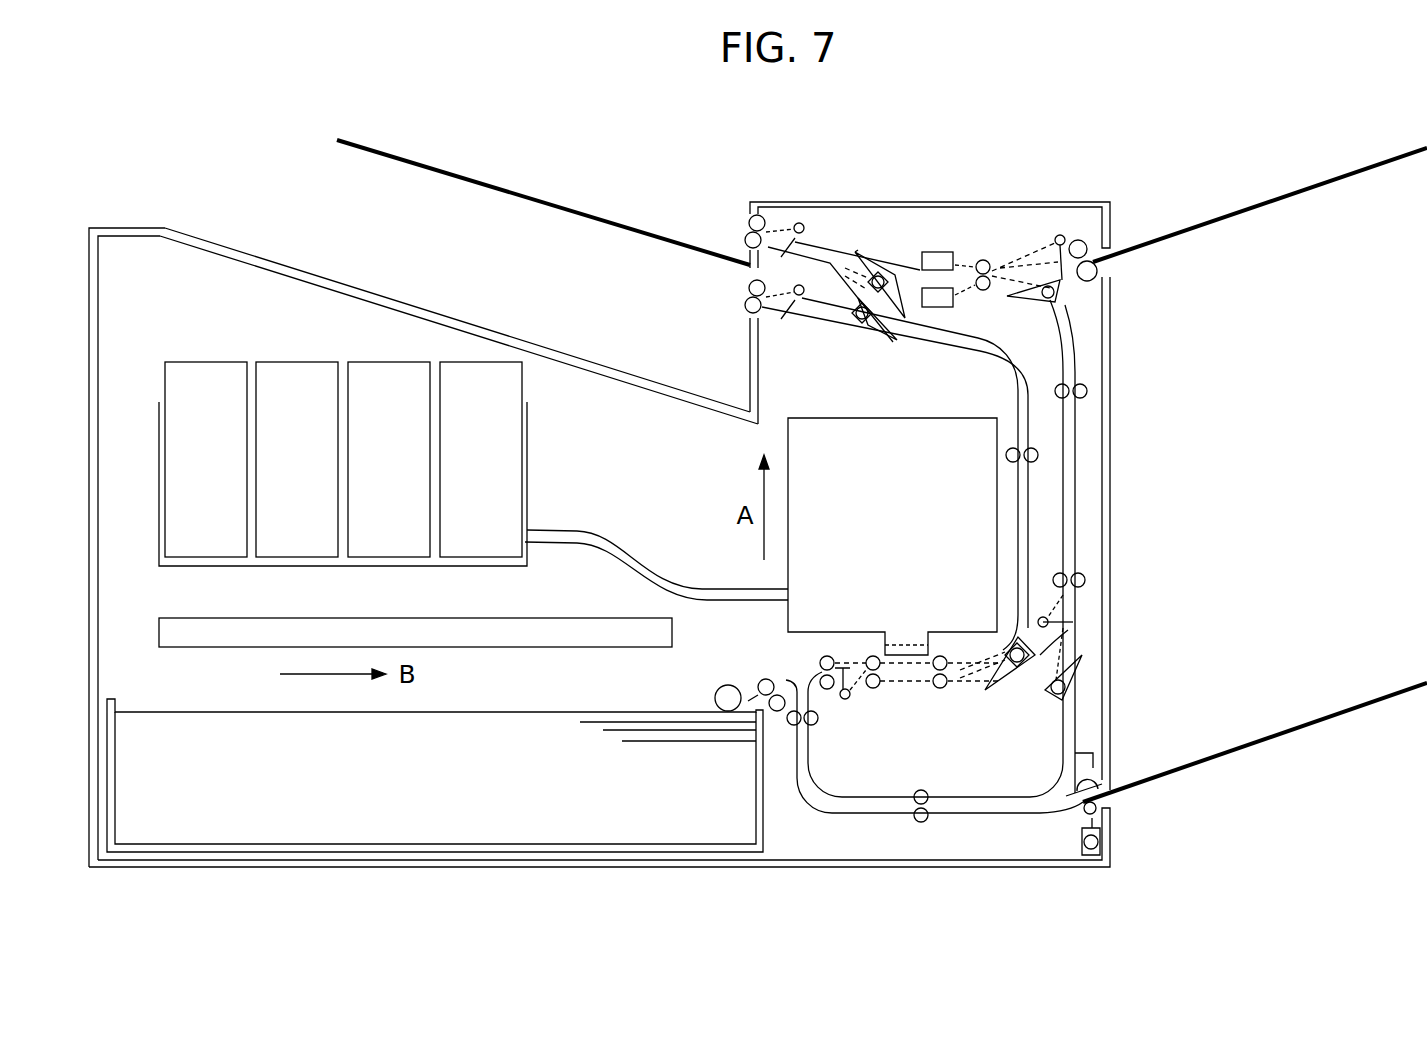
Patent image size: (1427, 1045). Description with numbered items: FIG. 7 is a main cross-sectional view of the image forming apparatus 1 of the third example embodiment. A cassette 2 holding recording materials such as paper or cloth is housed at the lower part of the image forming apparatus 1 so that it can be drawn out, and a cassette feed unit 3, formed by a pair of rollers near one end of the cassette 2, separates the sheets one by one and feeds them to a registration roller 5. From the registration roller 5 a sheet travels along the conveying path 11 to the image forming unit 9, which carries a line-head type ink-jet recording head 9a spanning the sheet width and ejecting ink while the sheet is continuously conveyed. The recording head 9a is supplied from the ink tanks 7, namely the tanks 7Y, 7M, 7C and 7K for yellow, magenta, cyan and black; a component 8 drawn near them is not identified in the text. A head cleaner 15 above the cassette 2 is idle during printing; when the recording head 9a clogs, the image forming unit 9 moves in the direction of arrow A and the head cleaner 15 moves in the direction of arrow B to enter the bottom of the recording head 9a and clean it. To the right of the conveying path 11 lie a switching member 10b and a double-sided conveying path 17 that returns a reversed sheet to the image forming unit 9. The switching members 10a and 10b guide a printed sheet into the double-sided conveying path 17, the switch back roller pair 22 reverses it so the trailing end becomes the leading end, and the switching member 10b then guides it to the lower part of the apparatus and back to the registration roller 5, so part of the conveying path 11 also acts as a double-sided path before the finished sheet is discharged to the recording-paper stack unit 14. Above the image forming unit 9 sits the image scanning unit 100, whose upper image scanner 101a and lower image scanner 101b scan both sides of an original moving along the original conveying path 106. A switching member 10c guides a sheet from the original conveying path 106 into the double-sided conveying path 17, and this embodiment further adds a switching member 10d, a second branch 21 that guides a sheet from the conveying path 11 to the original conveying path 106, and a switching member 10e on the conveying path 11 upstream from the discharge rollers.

The image forming apparatus 1 is at (197, 128).
The cassette 2 is at (364, 778).
The cassette feed unit 3 is at (775, 722).
The registration roller 5 is at (828, 722).
The ink tanks 7 is at (317, 481).
The yellow ink tank 7Y is at (189, 476).
The magenta ink tank 7M is at (279, 476).
The cyan ink tank 7C is at (372, 476).
The black ink tank 7K is at (464, 476).
The flexible cable 8 is at (618, 560).
The image forming unit 9 is at (850, 417).
The ink-jet recording head 9a is at (906, 638).
The switching member 10a is at (1008, 670).
The switching member 10b is at (1085, 690).
The switching member 10c is at (1062, 296).
The switching member 10d is at (893, 312).
The switching member 10e is at (897, 278).
The conveying path 11 is at (915, 342).
The recording-paper stack unit 14 is at (308, 275).
The head cleaner 15 is at (258, 647).
The double-sided conveying path 17 is at (1075, 432).
The second branch 21 is at (845, 287).
The switch back roller pair 22 is at (1085, 578).
The image scanning unit 100 is at (1045, 222).
The upper image scanner 101a is at (953, 262).
The lower image scanner 101b is at (947, 297).
The original conveying path 106 is at (885, 266).